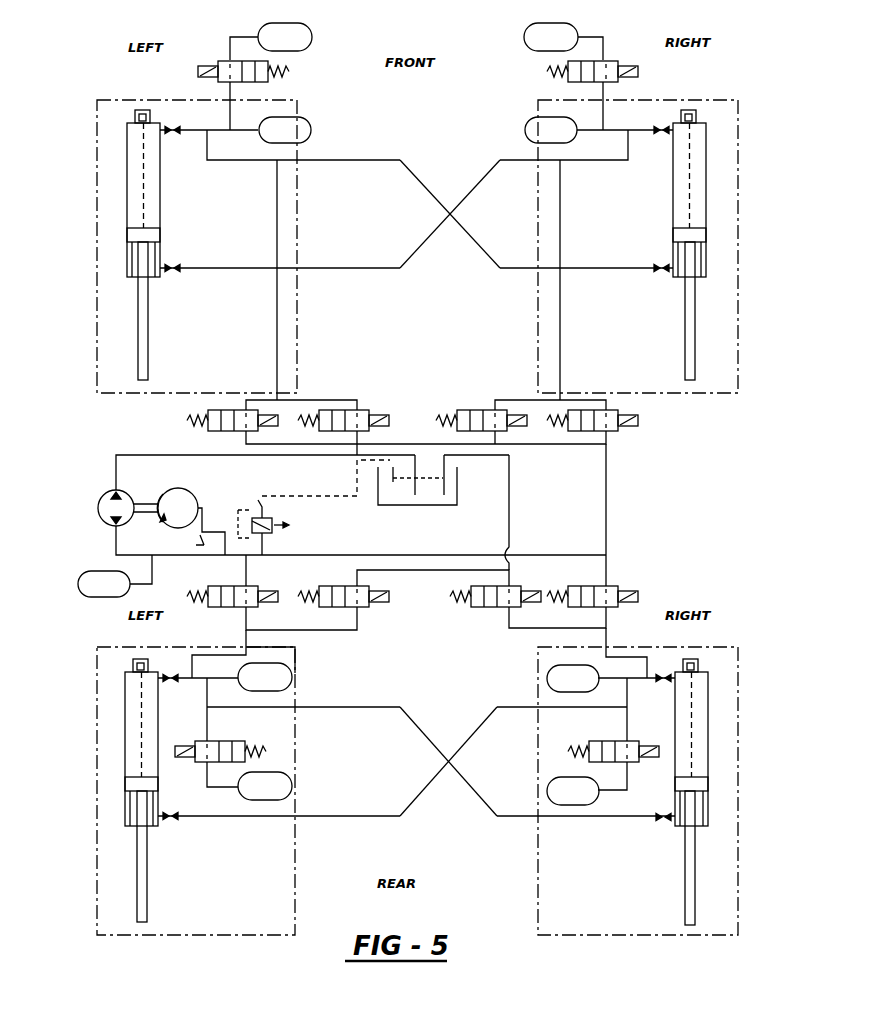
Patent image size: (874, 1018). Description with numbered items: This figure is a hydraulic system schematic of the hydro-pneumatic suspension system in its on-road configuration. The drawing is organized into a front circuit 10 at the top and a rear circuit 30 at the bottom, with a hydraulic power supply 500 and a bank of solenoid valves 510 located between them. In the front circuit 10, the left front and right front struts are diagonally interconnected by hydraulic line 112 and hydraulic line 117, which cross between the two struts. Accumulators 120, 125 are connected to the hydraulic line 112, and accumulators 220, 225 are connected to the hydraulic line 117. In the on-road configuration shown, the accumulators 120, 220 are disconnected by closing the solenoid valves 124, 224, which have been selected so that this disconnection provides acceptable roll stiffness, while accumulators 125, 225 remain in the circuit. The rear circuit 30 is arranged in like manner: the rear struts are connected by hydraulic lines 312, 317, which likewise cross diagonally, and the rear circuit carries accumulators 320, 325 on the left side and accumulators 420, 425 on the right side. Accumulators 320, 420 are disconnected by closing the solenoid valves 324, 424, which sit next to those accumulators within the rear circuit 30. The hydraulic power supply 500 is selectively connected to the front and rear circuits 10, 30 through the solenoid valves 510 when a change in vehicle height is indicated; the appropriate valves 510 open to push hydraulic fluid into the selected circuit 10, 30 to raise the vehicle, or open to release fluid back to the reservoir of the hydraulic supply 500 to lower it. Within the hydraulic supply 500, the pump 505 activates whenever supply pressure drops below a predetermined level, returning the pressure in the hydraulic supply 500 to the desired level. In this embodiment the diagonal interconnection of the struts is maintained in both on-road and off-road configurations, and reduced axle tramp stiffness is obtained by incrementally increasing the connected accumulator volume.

The front circuit 10 is at (84, 254).
The solenoid valve 124 is at (228, 60).
The accumulator 120 is at (313, 44).
The accumulator 125 is at (311, 124).
The hydraulic line 112 is at (378, 161).
The hydraulic line 117 is at (378, 268).
The solenoid valve 224 is at (612, 60).
The accumulator 220 is at (524, 38).
The accumulator 225 is at (524, 130).
The hydraulic power supply 500 is at (98, 456).
The pump 505 is at (103, 521).
The solenoid valves 510 is at (641, 428).
The rear circuit 30 is at (84, 790).
The accumulator 325 is at (292, 672).
The solenoid valve 324 is at (192, 764).
The accumulator 320 is at (266, 801).
The hydraulic line 312 is at (372, 707).
The hydraulic line 317 is at (375, 817).
The accumulator 425 is at (547, 680).
The solenoid valve 424 is at (632, 765).
The accumulator 420 is at (547, 783).